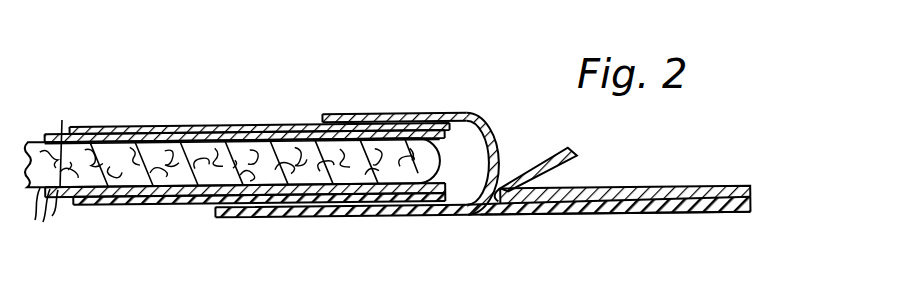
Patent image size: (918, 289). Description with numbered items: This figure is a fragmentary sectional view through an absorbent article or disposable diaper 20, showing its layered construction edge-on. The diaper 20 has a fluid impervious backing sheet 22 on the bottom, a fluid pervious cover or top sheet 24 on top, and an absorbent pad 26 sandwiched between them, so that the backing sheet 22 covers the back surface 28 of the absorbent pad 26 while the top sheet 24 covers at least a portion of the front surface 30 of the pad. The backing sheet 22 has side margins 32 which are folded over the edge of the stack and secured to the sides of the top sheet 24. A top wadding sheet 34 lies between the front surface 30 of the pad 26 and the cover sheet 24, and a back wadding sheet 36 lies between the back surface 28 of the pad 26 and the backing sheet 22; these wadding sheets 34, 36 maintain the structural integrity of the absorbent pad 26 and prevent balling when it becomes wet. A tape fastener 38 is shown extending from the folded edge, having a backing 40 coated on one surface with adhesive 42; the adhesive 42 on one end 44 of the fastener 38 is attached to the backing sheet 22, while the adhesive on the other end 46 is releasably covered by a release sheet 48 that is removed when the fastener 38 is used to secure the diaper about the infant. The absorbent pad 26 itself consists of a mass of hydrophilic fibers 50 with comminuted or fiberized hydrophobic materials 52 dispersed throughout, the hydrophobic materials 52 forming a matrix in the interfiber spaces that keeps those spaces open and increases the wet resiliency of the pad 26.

The disposable diaper 20 is at (148, 124).
The backing sheet 22 is at (103, 208).
The top sheet 24 is at (214, 128).
The absorbent pad 26 is at (75, 165).
The back surface 28 is at (170, 192).
The front surface 30 is at (263, 137).
The side margins 32 is at (362, 116).
The top wadding sheet 34 is at (300, 137).
The back wadding sheet 36 is at (302, 207).
The tape fasteners 38 is at (463, 215).
The backing 40 is at (515, 217).
The adhesive 42 is at (582, 190).
The one end 44 is at (323, 216).
The other end 46 is at (590, 213).
The release sheet 48 is at (566, 145).
The hydrophilic fibers 50 is at (62, 120).
The hydrophobic materials 52 is at (52, 222).